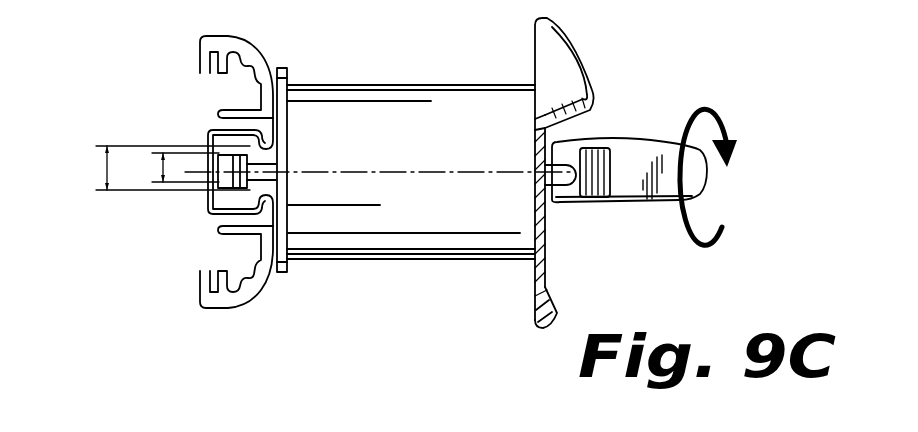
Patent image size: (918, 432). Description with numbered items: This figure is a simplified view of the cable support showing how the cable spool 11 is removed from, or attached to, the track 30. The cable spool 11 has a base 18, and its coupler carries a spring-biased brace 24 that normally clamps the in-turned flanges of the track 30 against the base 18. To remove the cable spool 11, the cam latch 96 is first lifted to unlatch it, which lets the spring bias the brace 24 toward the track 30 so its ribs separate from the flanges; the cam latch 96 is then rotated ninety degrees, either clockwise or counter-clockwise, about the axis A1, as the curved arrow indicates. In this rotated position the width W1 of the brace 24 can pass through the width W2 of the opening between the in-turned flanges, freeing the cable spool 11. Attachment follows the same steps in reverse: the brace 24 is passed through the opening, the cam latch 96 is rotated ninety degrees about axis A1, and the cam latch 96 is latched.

The cable spool 11 is at (387, 68).
The base 18 is at (283, 68).
The brace 24 is at (198, 120).
The track 30 is at (258, 281).
The cam latch 96 is at (640, 153).
The axis A1 is at (416, 168).
The width of the brace W1 is at (158, 180).
The width of the opening W2 is at (103, 170).